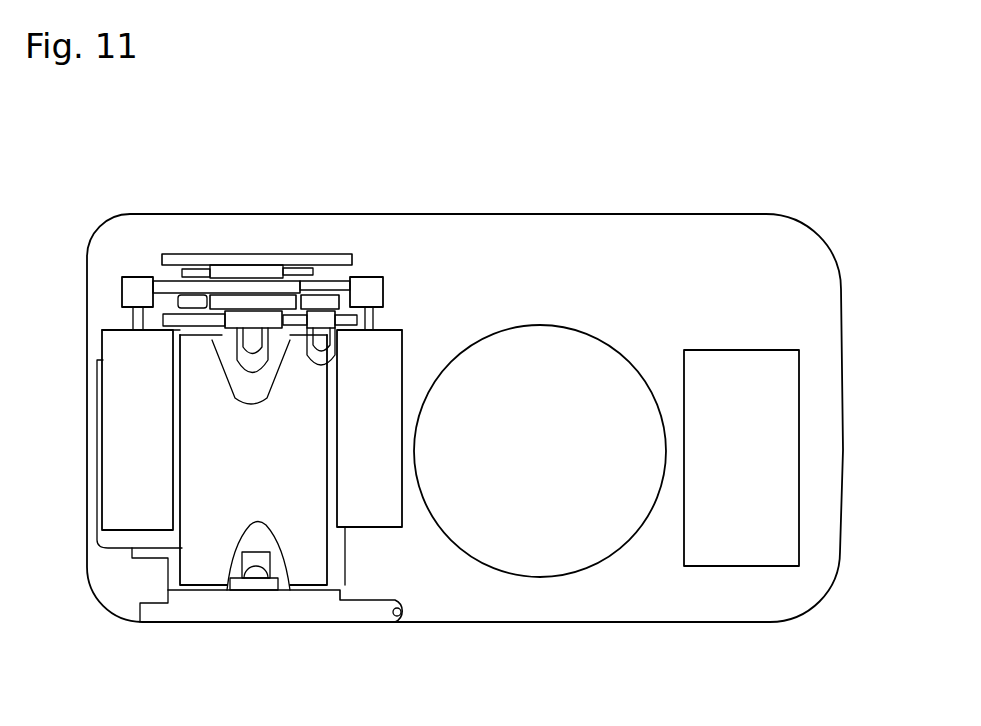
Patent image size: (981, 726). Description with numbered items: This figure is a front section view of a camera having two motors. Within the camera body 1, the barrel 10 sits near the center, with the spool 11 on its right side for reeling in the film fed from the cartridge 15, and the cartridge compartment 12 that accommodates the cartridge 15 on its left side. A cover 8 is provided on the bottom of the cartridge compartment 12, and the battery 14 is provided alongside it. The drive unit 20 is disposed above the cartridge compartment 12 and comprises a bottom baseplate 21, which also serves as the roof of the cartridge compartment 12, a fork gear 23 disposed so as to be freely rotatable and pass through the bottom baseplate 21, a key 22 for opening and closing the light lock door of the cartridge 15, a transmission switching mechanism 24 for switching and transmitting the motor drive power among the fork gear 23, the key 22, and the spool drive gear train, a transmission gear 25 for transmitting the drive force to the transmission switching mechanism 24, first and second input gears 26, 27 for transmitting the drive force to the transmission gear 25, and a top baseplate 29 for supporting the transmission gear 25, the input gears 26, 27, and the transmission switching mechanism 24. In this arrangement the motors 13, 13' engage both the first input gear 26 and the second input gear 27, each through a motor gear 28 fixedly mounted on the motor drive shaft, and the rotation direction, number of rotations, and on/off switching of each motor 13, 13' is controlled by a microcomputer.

The camera body 1 is at (545, 212).
The cover 8 is at (317, 608).
The barrel 10 is at (582, 350).
The spool 11 is at (762, 370).
The cartridge compartment 12 is at (173, 582).
The motor 13 is at (114, 488).
The motor 13' is at (396, 506).
The battery 14 is at (118, 538).
The cartridge 15 is at (203, 557).
The drive unit 20 is at (175, 250).
The bottom baseplate 21 is at (127, 318).
The key 22 is at (326, 302).
The fork gear 23 is at (217, 268).
The transmission switching mechanism 24 is at (237, 323).
The transmission gear 25 is at (282, 279).
The first input gear 26 is at (342, 283).
The second input gear 27 is at (163, 283).
The motor gear 28 is at (130, 297).
The top baseplate 29 is at (166, 260).